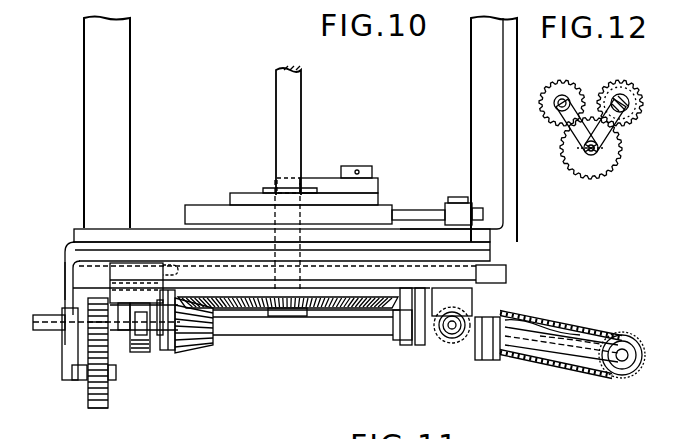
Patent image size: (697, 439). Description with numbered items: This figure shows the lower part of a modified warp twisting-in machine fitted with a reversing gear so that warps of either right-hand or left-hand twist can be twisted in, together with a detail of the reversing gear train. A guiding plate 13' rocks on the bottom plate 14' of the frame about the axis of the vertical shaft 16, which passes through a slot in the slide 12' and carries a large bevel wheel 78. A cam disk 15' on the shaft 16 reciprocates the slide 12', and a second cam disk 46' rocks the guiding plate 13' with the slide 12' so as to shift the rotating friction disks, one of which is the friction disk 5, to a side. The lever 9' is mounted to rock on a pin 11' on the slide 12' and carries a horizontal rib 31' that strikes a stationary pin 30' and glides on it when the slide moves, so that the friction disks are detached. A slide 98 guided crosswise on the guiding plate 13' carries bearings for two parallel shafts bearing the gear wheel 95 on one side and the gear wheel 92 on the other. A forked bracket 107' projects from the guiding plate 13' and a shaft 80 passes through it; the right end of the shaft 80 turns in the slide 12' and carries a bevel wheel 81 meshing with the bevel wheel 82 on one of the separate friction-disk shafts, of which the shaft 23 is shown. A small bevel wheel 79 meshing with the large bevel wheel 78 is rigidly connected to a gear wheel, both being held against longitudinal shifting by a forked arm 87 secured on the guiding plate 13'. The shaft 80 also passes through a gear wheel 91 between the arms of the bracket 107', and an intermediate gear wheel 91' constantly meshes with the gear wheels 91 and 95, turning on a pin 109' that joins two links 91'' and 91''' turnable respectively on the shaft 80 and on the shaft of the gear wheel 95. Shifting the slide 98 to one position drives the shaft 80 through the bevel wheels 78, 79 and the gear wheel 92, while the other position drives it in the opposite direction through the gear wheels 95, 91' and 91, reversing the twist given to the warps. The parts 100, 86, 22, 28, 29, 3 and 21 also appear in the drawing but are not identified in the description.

In FIG. 10, the upright column 100 is at (112, 92).
In FIG. 10, the vertical shaft 16 is at (290, 122).
In FIG. 10, the cam disk 15' is at (304, 181).
In FIG. 10, the second cam disk 46' is at (334, 200).
In FIG. 10, the guiding plate 13' is at (282, 220).
In FIG. 10, the bottom plate 14' is at (270, 271).
In FIG. 10, the slide 12' is at (310, 257).
In FIG. 10, the bevel wheel 82 is at (460, 308).
In FIG. 10, the forked bracket 107' is at (55, 281).
In FIG. 10, the slide 98 is at (110, 272).
In FIG. 10, the forked arm 87 is at (178, 296).
In FIG. 10, the link 91'' is at (106, 313).
In FIG. 12, the link 91'' is at (622, 125).
In FIG. 10, the link 91''' is at (71, 354).
In FIG. 12, the link 91''' is at (562, 125).
In FIG. 10, the intermediate gear wheel 91' is at (103, 422).
In FIG. 12, the intermediate gear wheel 91' is at (591, 162).
In FIG. 10, the gear wheel 95 is at (110, 345).
In FIG. 12, the gear wheel 95 is at (553, 83).
In FIG. 10, the gear wheel 92 is at (145, 352).
In FIG. 10, the collar 86 is at (170, 352).
In FIG. 10, the small bevel wheel 79 is at (205, 345).
In FIG. 10, the shaft 80 is at (308, 335).
In FIG. 12, the shaft 80 is at (610, 86).
In FIG. 10, the large bevel wheel 78 is at (366, 305).
In FIG. 10, the bevel wheel 81 is at (412, 345).
In FIG. 10, the sprocket 22 is at (452, 328).
In FIG. 10, the shaft 23 is at (458, 332).
In FIG. 10, the pin 11' is at (497, 354).
In FIG. 10, the upper chain 28 is at (570, 372).
In FIG. 10, the lower chain 29 is at (595, 378).
In FIG. 10, the sprocket 3 is at (620, 380).
In FIG. 10, the rotating friction disk 5 is at (628, 375).
In FIG. 10, the shaft 21 is at (626, 343).
In FIG. 10, the lever 9' is at (574, 325).
In FIG. 10, the horizontal rib 31' is at (561, 331).
In FIG. 10, the stationary pin 30' is at (542, 314).
In FIG. 12, the gear wheel 91 is at (630, 89).
In FIG. 12, the pin 109' is at (620, 162).